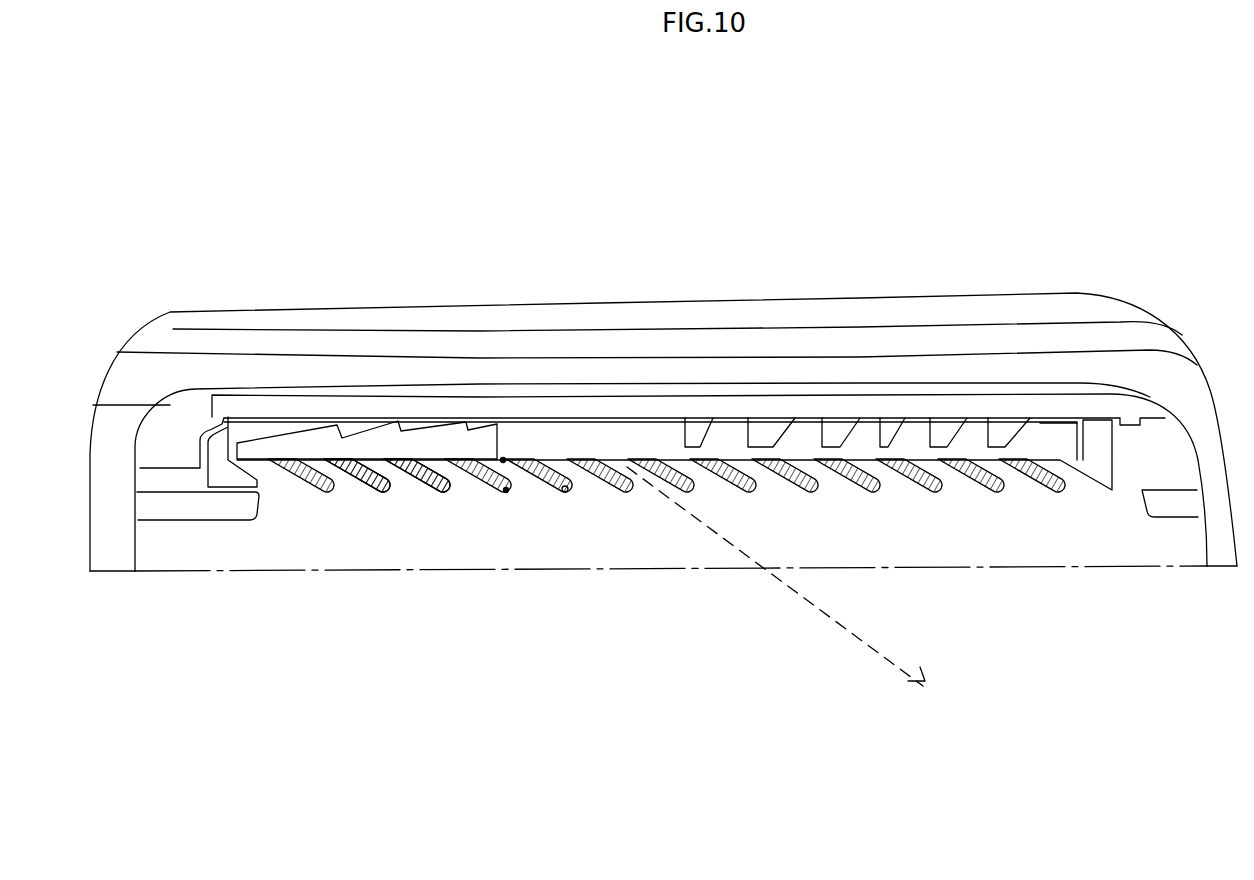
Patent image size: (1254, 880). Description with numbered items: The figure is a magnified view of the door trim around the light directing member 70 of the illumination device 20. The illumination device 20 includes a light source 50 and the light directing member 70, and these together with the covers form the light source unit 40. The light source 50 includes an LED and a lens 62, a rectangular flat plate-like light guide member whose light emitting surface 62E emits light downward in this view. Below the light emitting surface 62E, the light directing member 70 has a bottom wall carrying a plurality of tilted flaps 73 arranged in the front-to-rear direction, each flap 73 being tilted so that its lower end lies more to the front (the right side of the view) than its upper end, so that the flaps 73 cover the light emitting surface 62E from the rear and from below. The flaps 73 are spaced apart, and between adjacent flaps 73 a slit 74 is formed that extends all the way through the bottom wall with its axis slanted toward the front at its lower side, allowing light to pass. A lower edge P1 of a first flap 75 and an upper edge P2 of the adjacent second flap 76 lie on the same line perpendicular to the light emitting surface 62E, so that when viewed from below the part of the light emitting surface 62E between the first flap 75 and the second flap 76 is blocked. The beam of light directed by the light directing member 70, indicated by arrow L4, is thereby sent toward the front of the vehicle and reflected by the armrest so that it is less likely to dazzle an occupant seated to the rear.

The illumination device 20 is at (663, 421).
The light source unit 40 is at (266, 427).
The light source 50 is at (652, 365).
The lens 62 is at (667, 432).
The light emitting surface 62E is at (924, 458).
The tilted flaps 73 is at (420, 483).
The slit 74 is at (488, 467).
The first flap 75 is at (468, 471).
The second flap 76 is at (568, 492).
The light directing member 70 is at (1056, 501).
The lower edge of first flap P1 is at (507, 492).
The upper edge of second flap P2 is at (504, 458).
The arrow indicating beam of light L4 is at (860, 631).